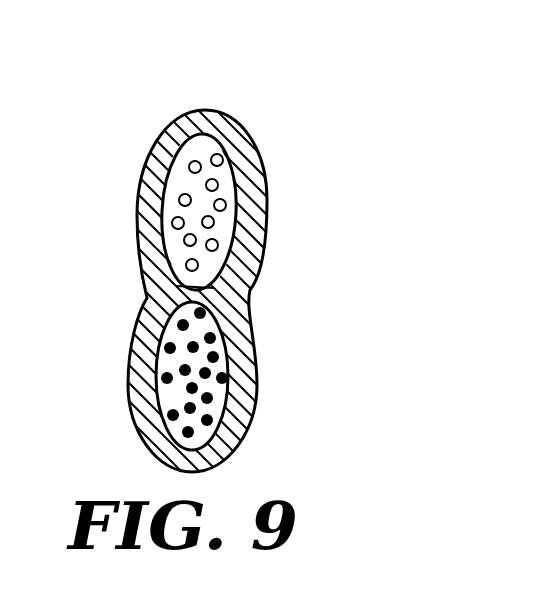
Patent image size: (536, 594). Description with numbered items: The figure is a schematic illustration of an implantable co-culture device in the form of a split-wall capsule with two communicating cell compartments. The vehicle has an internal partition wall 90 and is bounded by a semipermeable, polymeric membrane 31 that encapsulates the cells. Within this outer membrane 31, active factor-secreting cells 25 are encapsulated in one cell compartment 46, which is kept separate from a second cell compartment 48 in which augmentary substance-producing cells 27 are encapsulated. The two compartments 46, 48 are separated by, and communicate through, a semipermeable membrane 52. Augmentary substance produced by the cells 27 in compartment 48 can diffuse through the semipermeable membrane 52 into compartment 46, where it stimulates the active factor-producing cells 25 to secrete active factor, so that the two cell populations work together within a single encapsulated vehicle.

The internal partition wall 90 is at (149, 107).
The semipermeable polymeric membrane 31 is at (254, 139).
The active factor-secreting cells 25 is at (224, 206).
The augmentary substance-producing cells 27 is at (222, 378).
The cell compartment 46 is at (163, 211).
The cell compartment 48 is at (157, 362).
The semipermeable membrane 52 is at (200, 294).